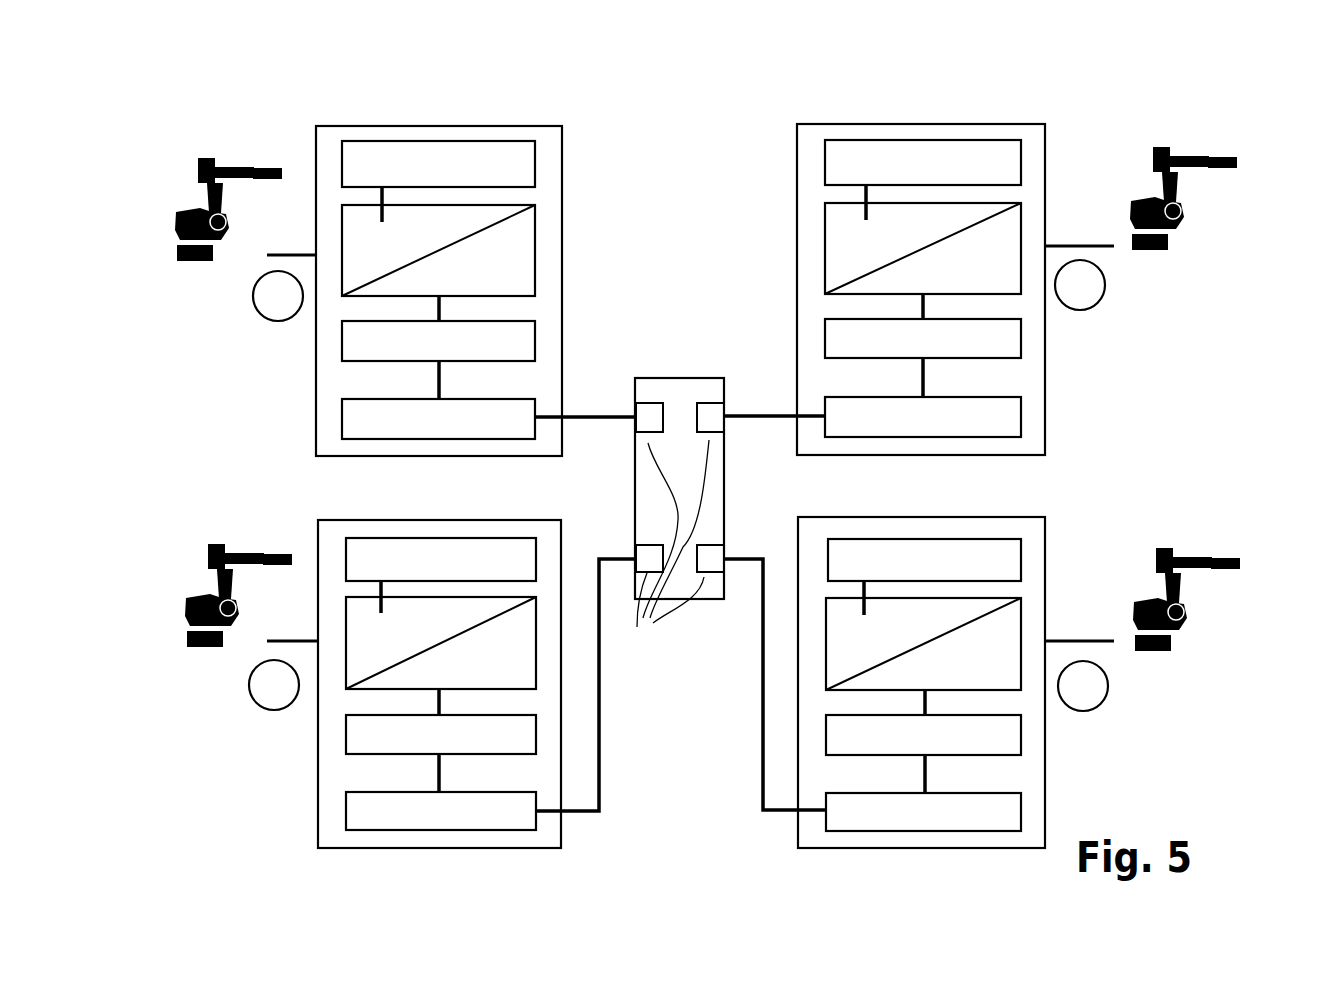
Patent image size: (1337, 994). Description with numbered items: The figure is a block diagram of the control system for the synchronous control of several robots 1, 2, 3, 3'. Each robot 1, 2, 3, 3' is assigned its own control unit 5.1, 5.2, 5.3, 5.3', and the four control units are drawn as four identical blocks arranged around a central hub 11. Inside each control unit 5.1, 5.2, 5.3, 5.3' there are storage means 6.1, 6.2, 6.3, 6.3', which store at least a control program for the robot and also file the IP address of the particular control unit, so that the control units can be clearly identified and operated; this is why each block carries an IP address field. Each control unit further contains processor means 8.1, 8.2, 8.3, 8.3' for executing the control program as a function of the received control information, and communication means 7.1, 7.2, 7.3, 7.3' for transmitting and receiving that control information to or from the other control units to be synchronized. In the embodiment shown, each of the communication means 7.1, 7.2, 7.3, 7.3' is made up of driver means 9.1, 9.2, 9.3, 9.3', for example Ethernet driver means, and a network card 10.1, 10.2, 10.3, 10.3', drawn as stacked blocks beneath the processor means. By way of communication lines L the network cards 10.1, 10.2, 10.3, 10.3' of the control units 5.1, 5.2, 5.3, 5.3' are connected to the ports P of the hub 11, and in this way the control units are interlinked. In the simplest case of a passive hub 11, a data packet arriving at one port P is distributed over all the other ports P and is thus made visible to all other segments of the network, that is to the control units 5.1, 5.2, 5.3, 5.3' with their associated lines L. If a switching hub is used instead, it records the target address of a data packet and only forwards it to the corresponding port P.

The robot 1 is at (180, 271).
The robot 2 is at (1201, 228).
The robot 3 is at (205, 643).
The robot 3' is at (1184, 629).
The control unit 5.1 is at (594, 146).
The control unit 5.2 is at (1072, 141).
The control unit 5.3 is at (343, 696).
The control unit 5.3' is at (1010, 641).
The storage means 6.1 is at (341, 228).
The storage means 6.2 is at (824, 220).
The storage means 6.3 is at (379, 584).
The storage means 6.3' is at (852, 739).
The communication means 7.1 is at (332, 374).
The communication means 7.2 is at (999, 378).
The communication means 7.3 is at (321, 798).
The communication means 7.3' is at (1077, 741).
The processor means 8.1 is at (539, 242).
The processor means 8.2 is at (1022, 226).
The processor means 8.3 is at (495, 763).
The processor means 8.3' is at (1039, 586).
The driver means 9.1 is at (537, 340).
The driver means 9.2 is at (820, 340).
The driver means 9.3 is at (441, 822).
The driver means 9.3' is at (901, 819).
The network card 10.1 is at (537, 403).
The network card 10.2 is at (820, 403).
The network card 10.3 is at (447, 852).
The network card 10.3' is at (923, 858).
The hub 11 is at (726, 524).
The port P is at (677, 533).
The line L is at (612, 428).